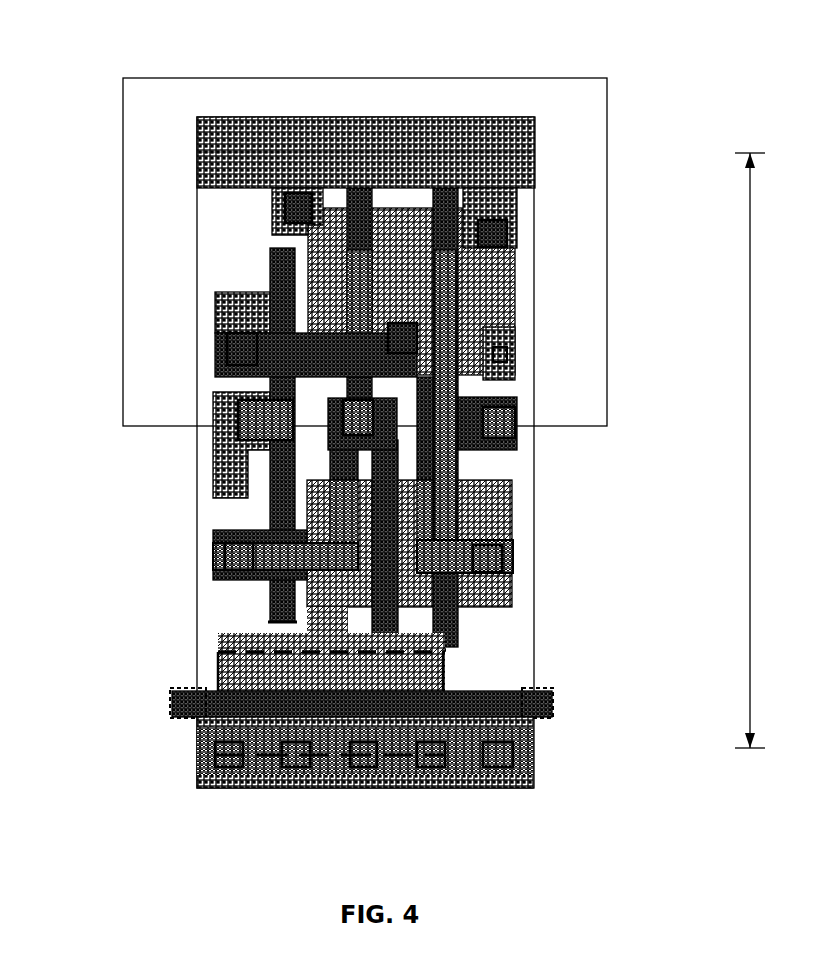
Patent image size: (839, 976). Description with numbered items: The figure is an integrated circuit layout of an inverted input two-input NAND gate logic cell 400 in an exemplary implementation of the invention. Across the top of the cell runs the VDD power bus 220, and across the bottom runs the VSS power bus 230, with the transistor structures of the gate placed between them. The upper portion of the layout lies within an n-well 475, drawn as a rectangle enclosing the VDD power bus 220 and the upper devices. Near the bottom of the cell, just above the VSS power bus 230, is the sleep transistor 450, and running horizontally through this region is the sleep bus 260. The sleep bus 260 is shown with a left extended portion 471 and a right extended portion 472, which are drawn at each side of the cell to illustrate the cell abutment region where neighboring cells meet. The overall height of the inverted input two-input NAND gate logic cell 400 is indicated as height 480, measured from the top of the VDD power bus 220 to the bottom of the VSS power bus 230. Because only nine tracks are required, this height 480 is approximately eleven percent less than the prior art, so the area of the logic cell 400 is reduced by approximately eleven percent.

The inverted input two-input NAND gate logic cell 400 is at (46, 70).
The VDD power bus 220 is at (533, 139).
The n-well 475 is at (608, 212).
The height 480 is at (751, 297).
The sleep transistor 450 is at (273, 638).
The left extended portion of sleep bus 471 is at (168, 693).
The right extended portion of sleep bus 472 is at (558, 689).
The sleep bus 260 is at (492, 692).
The VSS power bus 230 is at (532, 752).